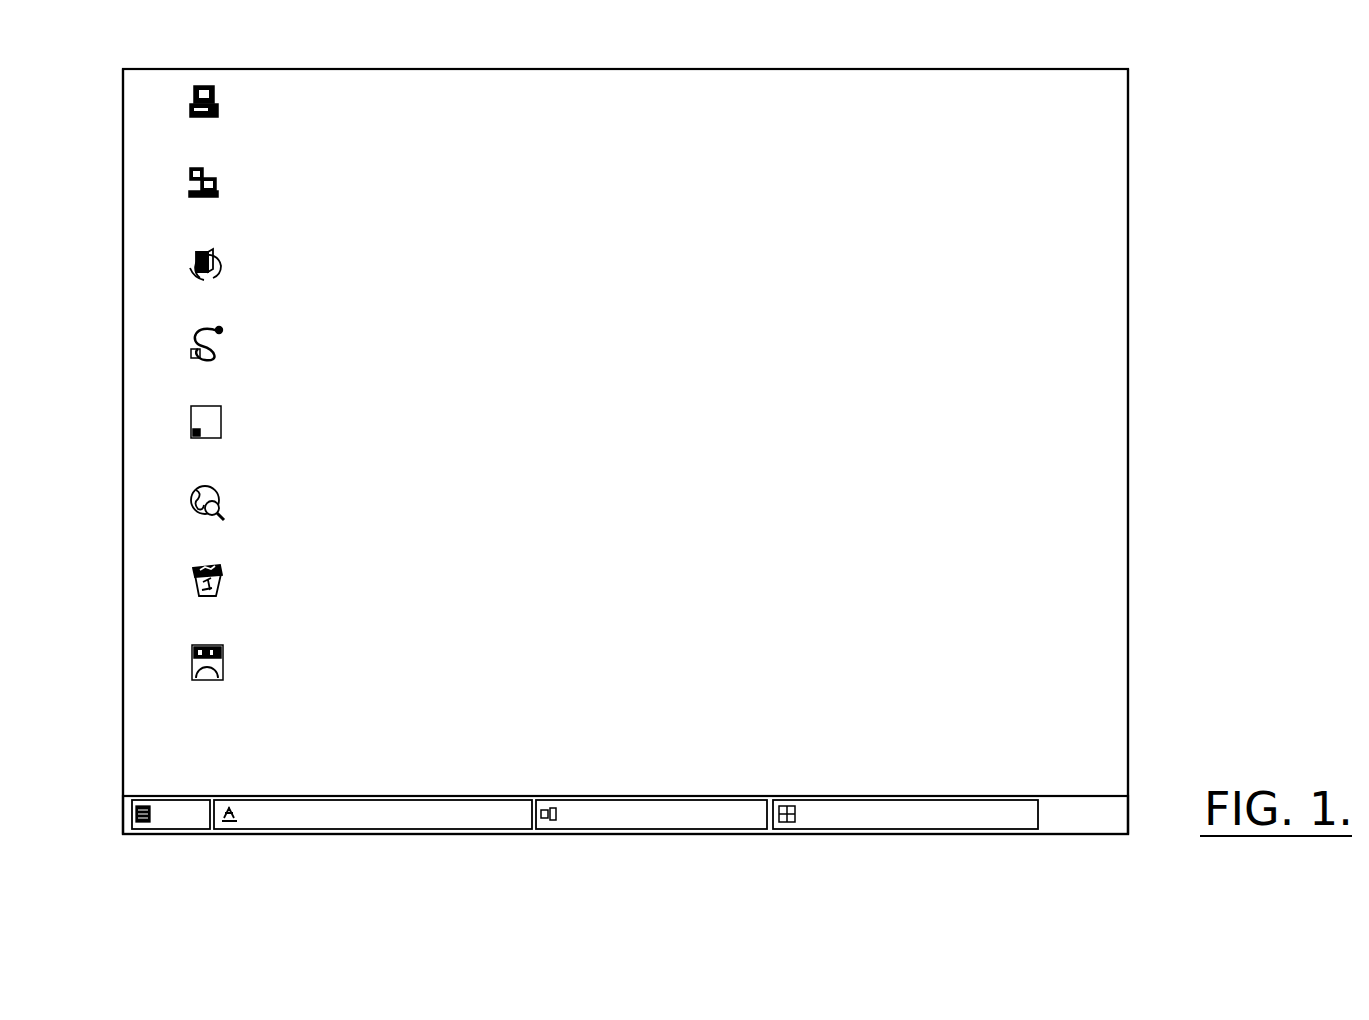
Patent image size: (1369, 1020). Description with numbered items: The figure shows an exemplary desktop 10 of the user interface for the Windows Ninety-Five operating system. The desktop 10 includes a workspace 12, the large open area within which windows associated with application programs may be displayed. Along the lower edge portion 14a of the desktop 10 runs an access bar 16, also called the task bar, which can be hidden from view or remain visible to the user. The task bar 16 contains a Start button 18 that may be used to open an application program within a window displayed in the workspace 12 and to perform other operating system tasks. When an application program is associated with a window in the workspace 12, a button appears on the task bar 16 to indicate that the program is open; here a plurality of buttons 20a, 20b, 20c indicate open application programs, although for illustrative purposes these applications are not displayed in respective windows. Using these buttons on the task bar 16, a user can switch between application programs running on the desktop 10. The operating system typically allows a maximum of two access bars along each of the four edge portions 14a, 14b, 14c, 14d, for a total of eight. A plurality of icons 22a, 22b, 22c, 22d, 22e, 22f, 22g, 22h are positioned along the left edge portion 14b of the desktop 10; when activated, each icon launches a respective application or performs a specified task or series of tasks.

The desktop 10 is at (684, 467).
The workspace 12 is at (634, 424).
The lower edge portion 14a is at (656, 768).
The left edge portion 14b is at (185, 451).
The edge portion 14c is at (625, 103).
The edge portion 14d is at (1073, 451).
The access bar 16 is at (631, 830).
The Start button 18 is at (171, 832).
The button 20a is at (373, 832).
The button 20b is at (651, 832).
The button 20c is at (905, 832).
The icon 22a is at (269, 114).
The icon 22b is at (267, 198).
The icon 22c is at (289, 261).
The icon 22d is at (285, 348).
The icon 22e is at (279, 435).
The icon 22f is at (270, 501).
The icon 22g is at (273, 581).
The icon 22h is at (268, 674).